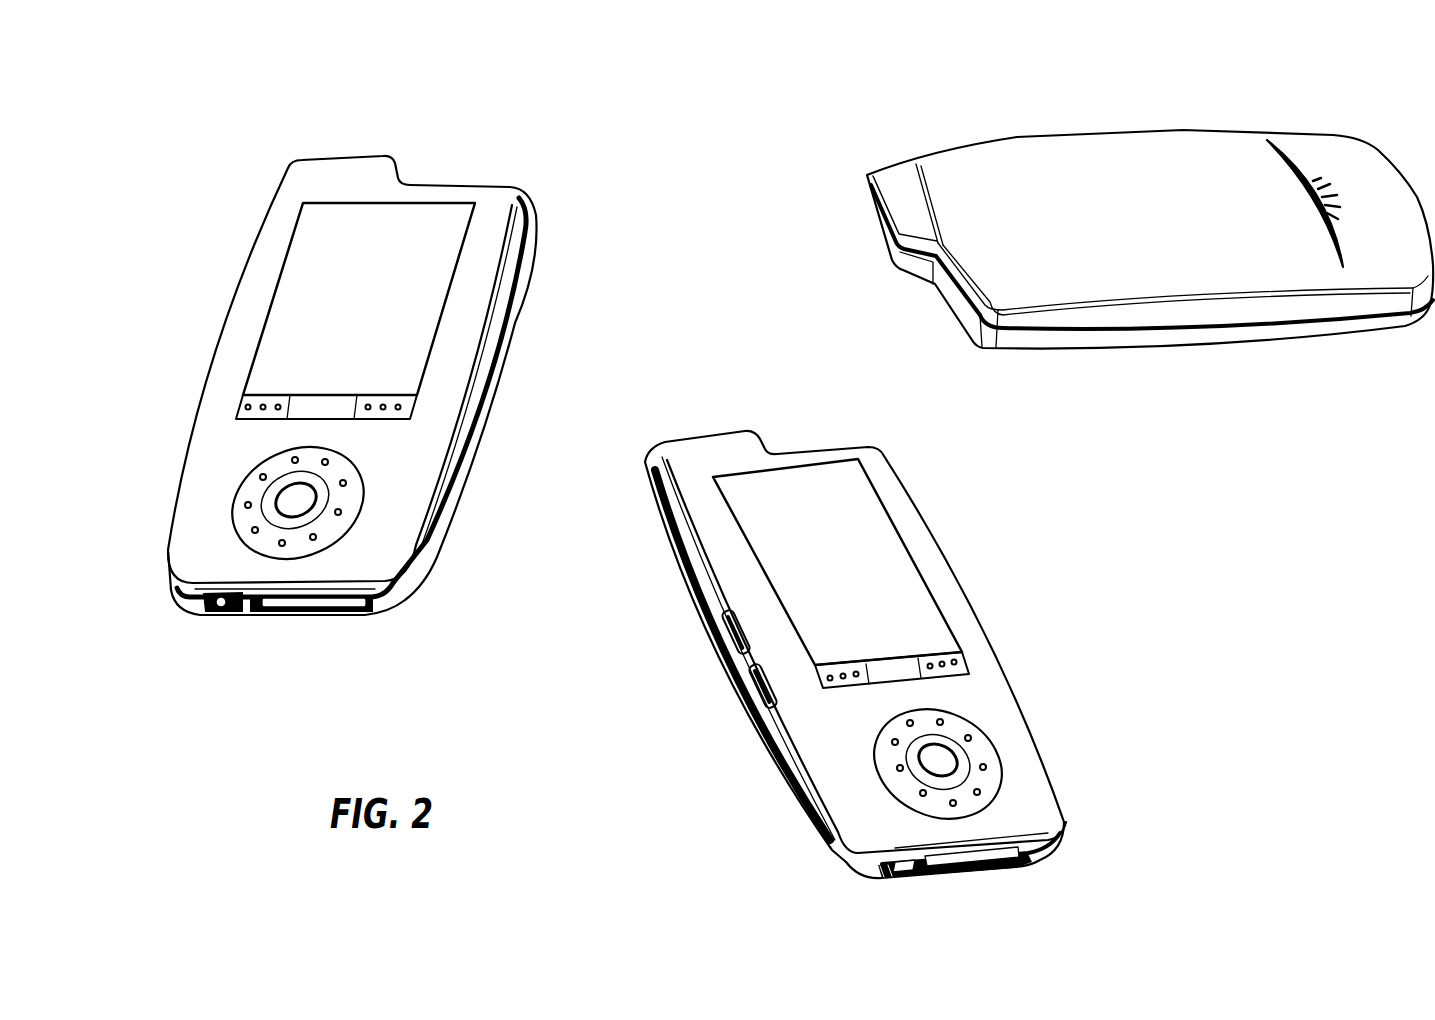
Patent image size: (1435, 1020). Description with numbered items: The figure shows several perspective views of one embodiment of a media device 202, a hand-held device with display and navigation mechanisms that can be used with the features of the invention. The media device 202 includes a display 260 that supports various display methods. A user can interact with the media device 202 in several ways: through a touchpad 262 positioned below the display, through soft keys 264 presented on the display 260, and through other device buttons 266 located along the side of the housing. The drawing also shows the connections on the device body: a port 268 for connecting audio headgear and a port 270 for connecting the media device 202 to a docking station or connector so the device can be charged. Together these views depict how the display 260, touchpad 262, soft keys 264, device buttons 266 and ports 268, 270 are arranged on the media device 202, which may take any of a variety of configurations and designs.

The media device 202 is at (520, 150).
The display 260 is at (340, 272).
The touchpad 262 is at (237, 502).
The soft keys 264 is at (240, 405).
The device buttons 266 is at (733, 632).
The port 268 is at (892, 866).
The port 270 is at (983, 866).